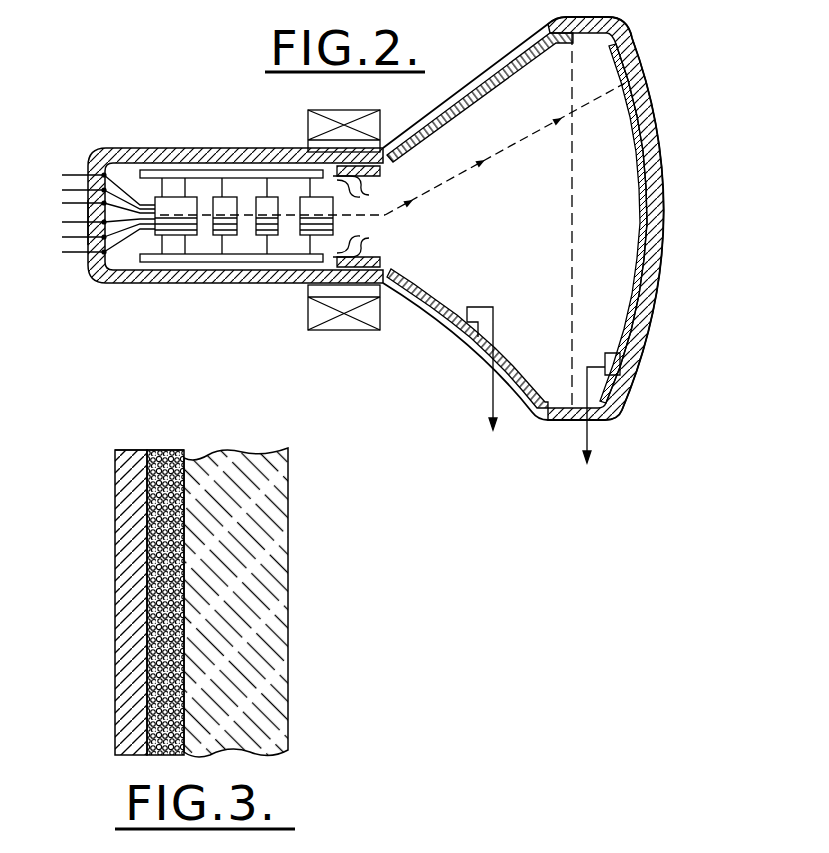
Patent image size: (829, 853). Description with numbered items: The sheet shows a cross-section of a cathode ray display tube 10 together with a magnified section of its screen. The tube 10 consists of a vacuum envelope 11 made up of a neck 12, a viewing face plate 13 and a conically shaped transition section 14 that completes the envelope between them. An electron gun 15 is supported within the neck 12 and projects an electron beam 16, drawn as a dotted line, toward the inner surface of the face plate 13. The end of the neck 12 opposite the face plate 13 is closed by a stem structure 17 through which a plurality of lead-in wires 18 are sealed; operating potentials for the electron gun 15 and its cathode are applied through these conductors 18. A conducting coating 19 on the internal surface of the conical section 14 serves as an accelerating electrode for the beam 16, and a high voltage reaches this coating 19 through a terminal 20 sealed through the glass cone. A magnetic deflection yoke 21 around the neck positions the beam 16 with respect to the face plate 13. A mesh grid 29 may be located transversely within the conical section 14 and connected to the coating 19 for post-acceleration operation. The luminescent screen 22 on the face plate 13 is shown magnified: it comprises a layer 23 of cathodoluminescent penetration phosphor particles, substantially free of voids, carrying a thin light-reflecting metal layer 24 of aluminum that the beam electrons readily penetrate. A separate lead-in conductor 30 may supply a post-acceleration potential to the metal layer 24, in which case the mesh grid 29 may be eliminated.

In FIG. 2, the tube 10 is at (488, 68).
In FIG. 2, the vacuum envelope 11 is at (523, 40).
In FIG. 2, the neck 12 is at (215, 148).
In FIG. 2, the viewing face plate 13 is at (650, 78).
In FIG. 3, the viewing face plate 13 is at (286, 537).
In FIG. 2, the conically shaped transition section 14 is at (436, 122).
In FIG. 2, the electron gun 15 is at (225, 262).
In FIG. 2, the electron beam 16 is at (496, 156).
In FIG. 2, the stem structure 17 is at (95, 283).
In FIG. 2, the lead-in wires 18 is at (56, 172).
In FIG. 2, the conducting coating 19 is at (510, 375).
In FIG. 2, the terminal 20 is at (490, 402).
In FIG. 2, the magnetic deflection yoke 21 is at (310, 118).
In FIG. 2, the luminescent screen 22 is at (642, 226).
In FIG. 3, the luminescent screen 22 is at (184, 443).
In FIG. 3, the layer of cathodoluminescent penetration phosphor particles 23 is at (152, 655).
In FIG. 3, the light-reflecting metal layer 24 is at (118, 537).
In FIG. 2, the mesh grid 29 is at (570, 260).
In FIG. 2, the lead-in conductor 30 is at (590, 432).